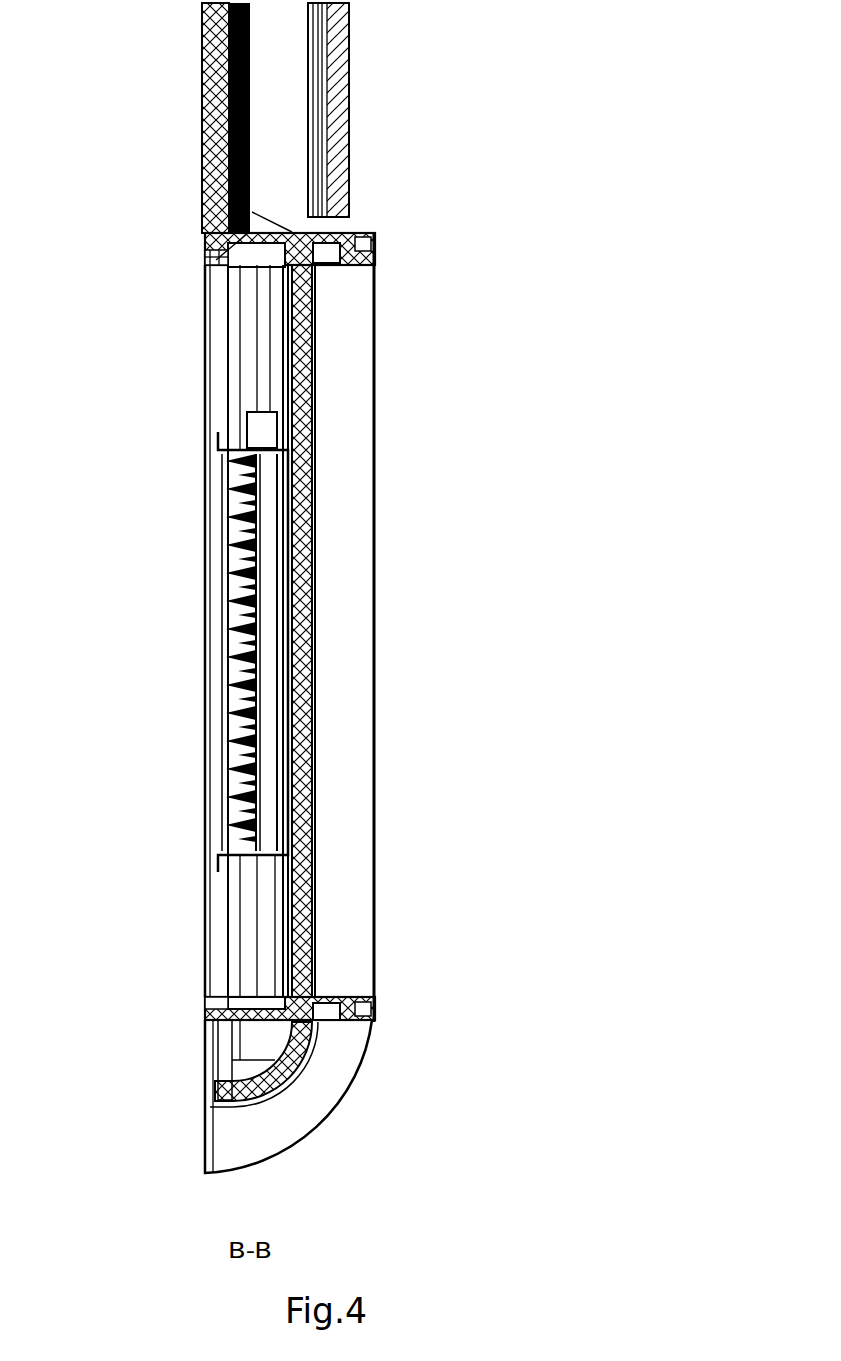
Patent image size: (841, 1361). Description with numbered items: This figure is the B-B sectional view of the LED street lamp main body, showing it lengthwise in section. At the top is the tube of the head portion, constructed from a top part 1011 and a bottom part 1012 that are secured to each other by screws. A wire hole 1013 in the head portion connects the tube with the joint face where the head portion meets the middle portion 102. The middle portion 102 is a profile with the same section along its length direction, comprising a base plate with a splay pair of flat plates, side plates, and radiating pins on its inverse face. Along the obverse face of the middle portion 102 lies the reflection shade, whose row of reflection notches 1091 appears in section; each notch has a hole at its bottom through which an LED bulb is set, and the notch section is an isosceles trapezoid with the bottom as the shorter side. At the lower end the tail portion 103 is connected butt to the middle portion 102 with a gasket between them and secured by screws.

The bottom part 1012 is at (202, 98).
The top part 1011 is at (347, 100).
The wire hole 1013 is at (230, 270).
The middle portion 102 is at (338, 593).
The reflection notches 1091 is at (223, 655).
The tail portion 103 is at (305, 1083).